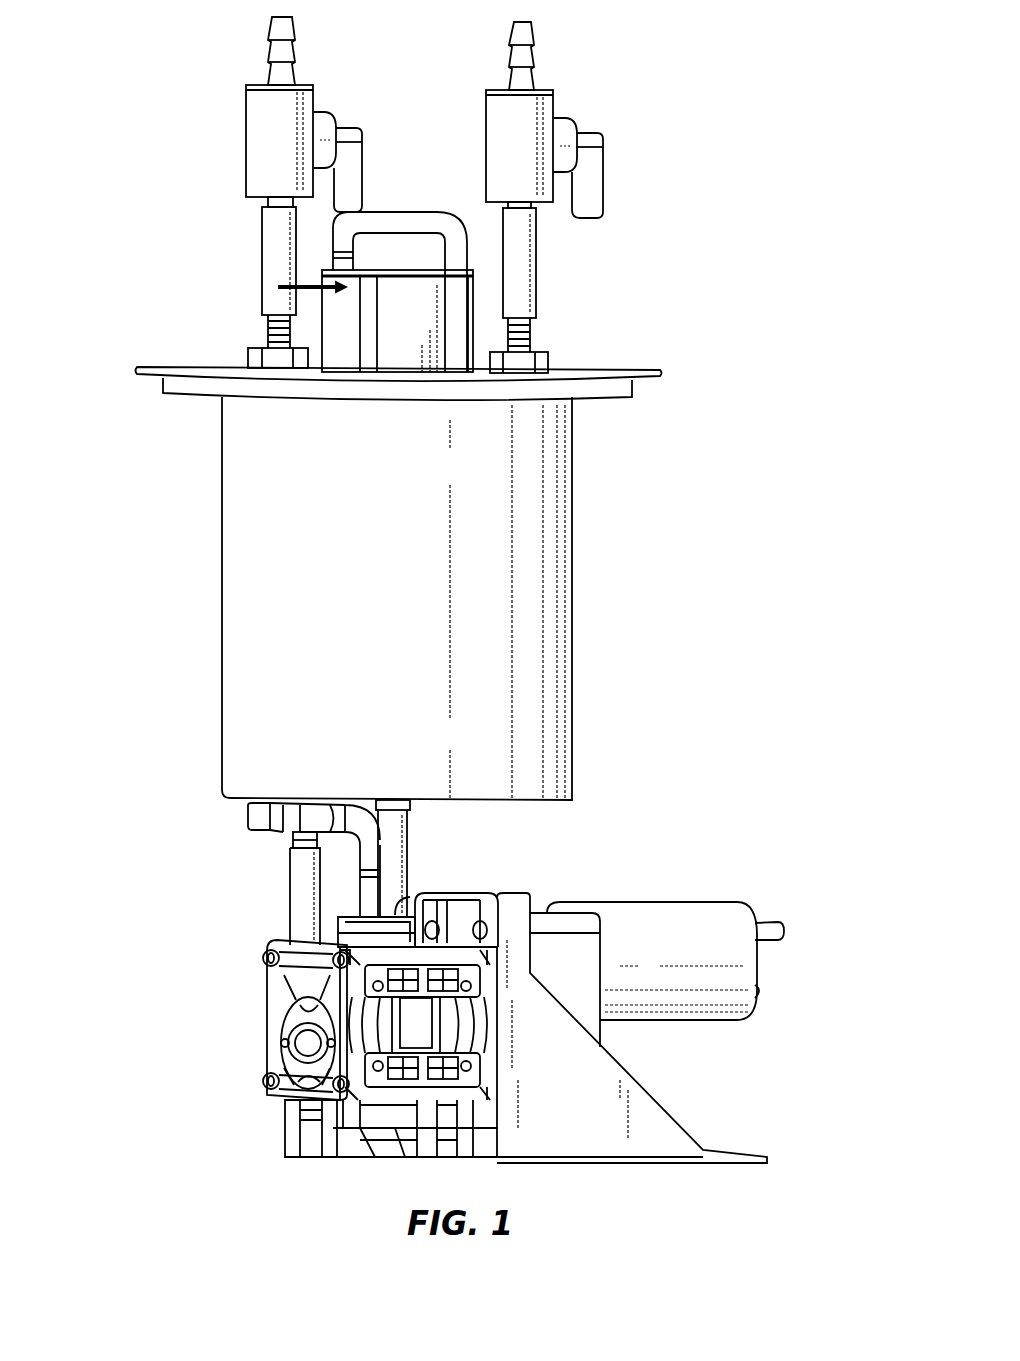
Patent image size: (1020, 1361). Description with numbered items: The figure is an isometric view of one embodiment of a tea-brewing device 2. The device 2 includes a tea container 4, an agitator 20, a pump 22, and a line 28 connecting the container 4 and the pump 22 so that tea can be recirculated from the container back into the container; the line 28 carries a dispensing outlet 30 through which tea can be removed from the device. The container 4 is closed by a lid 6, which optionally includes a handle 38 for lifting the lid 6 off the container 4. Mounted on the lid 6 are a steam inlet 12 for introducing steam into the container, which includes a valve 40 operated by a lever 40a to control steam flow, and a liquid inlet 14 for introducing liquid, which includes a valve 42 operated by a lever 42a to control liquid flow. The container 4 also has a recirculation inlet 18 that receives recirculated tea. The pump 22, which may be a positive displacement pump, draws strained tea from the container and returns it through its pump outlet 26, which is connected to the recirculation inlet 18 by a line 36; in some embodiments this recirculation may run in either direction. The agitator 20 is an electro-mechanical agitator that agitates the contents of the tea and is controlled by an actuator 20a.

The device 2 is at (112, 140).
The tea container 4 is at (221, 587).
The lid 6 is at (662, 373).
The steam inlet 12 is at (250, 356).
The liquid inlet 14 is at (546, 356).
The recirculation inlet 18 is at (410, 806).
The agitator 20 is at (412, 297).
The actuator 20a is at (312, 283).
The pump 22 is at (282, 1016).
The pump outlet 26 is at (395, 915).
The line 28 is at (250, 812).
The dispensing outlet 30 is at (294, 889).
The line 36 is at (397, 851).
The handle 38 is at (390, 214).
The valve 40 is at (258, 124).
The lever 40a is at (350, 133).
The valve 42 is at (546, 104).
The lever 42a is at (594, 136).